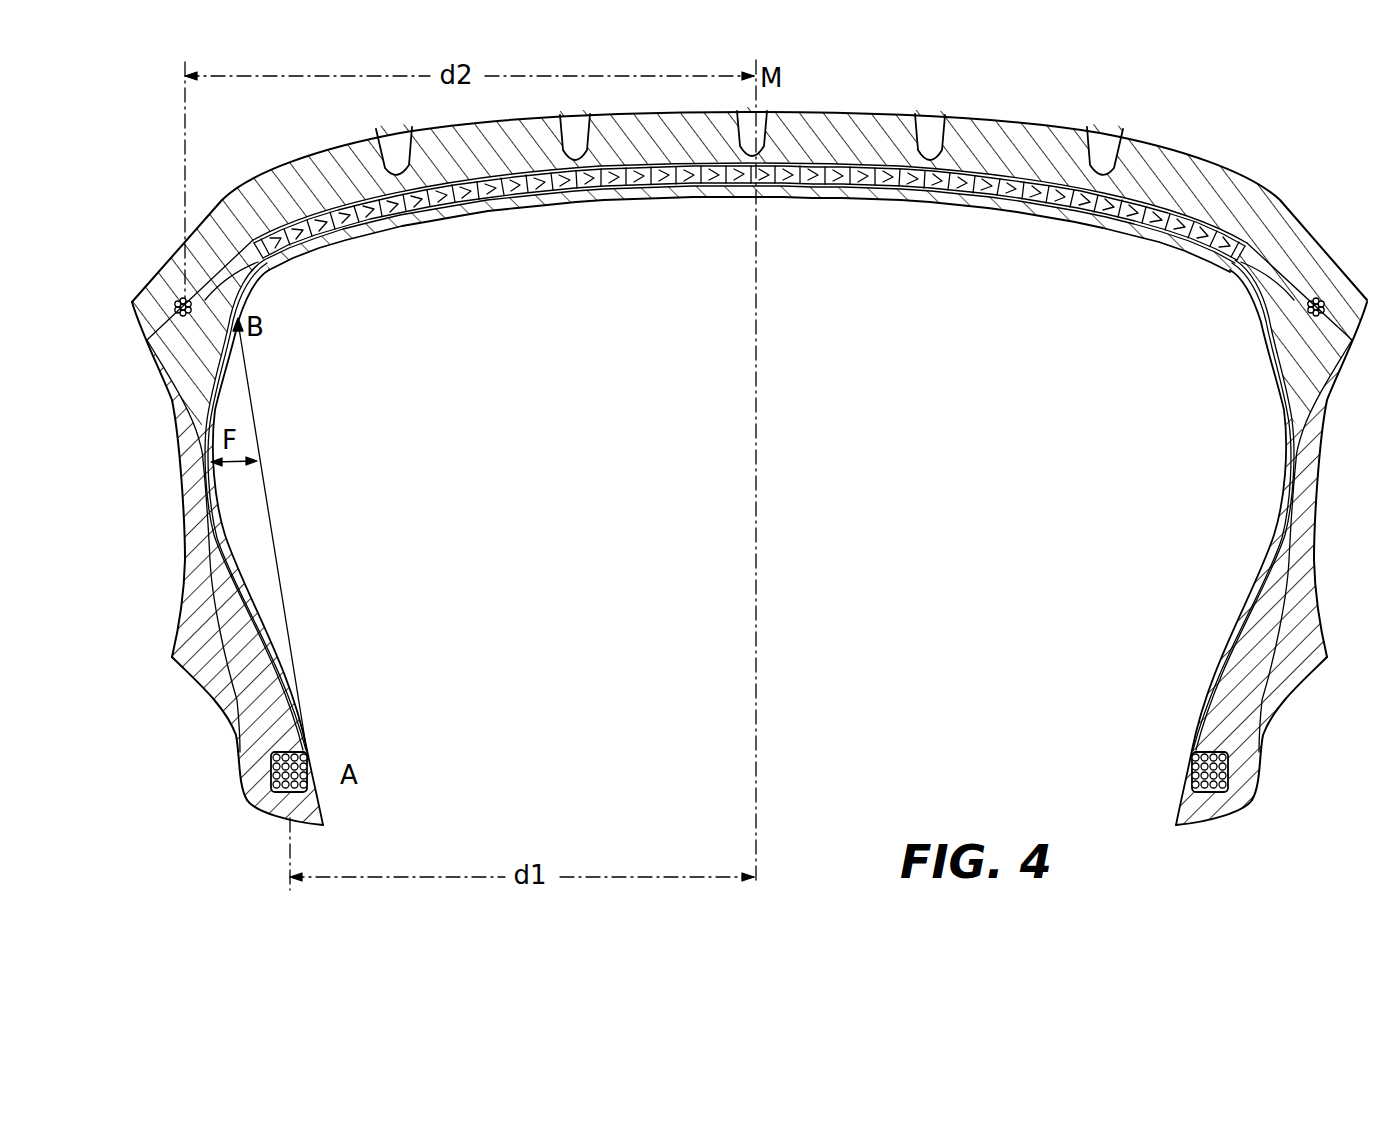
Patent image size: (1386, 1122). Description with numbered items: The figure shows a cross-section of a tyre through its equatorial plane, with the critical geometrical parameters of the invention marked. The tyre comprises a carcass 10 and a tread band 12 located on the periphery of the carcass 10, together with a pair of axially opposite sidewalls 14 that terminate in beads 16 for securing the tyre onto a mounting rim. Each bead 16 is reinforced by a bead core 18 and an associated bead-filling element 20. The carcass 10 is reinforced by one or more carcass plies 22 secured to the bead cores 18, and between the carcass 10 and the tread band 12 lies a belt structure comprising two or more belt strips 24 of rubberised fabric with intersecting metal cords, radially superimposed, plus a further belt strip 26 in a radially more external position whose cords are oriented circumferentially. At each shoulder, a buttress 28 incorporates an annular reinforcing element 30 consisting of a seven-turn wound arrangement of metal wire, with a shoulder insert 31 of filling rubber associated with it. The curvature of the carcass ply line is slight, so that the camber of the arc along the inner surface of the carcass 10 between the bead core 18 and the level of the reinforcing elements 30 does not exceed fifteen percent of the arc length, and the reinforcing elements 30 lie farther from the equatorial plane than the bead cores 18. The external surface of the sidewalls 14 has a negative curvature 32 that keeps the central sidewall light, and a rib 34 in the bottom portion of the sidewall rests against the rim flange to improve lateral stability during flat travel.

The carcass 10 is at (796, 200).
The tread band 12 is at (1030, 128).
The sidewalls 14 is at (183, 446).
The beads 16 is at (245, 772).
The bead cores 18 is at (270, 765).
The bead-filling elements 20 is at (282, 713).
The carcass plies 22 is at (945, 196).
The belt strips 24 is at (487, 192).
The further belt strip 26 is at (492, 134).
The buttress 28 is at (170, 332).
The annular reinforcing element 30 is at (178, 296).
The shoulder insert 31 is at (217, 303).
The negative curvature of the external surface of the sidewalls 32 is at (182, 500).
The rib 34 is at (300, 818).